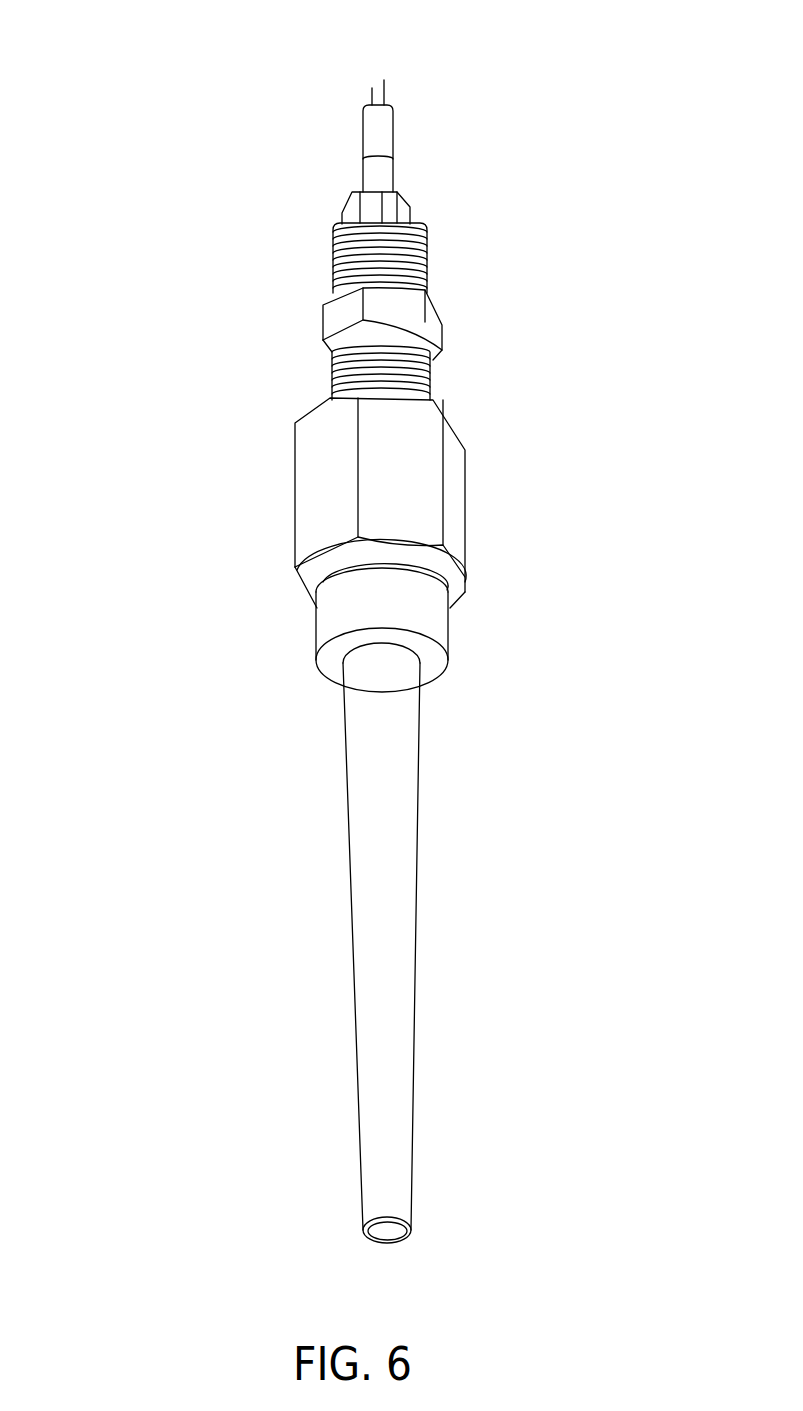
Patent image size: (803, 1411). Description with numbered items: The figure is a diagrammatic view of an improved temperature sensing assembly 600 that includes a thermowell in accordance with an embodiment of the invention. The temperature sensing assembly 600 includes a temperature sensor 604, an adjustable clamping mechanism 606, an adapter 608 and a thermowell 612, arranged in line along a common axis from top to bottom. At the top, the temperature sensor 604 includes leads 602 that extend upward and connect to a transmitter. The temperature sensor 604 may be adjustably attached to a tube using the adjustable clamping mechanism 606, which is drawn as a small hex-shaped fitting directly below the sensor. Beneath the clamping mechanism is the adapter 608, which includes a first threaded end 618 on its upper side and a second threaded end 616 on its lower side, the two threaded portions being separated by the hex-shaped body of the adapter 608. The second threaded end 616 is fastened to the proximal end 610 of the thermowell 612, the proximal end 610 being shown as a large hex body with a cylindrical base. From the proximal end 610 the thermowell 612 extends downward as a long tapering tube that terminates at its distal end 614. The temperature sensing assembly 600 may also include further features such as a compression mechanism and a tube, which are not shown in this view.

The temperature sensing assembly 600 is at (160, 117).
The leads 602 is at (364, 89).
The temperature sensor 604 is at (408, 141).
The adjustable clamping mechanism 606 is at (426, 215).
The adapter 608 is at (488, 337).
The proximal end 610 is at (421, 478).
The thermowell 612 is at (431, 798).
The distal end 614 is at (414, 1249).
The second threaded end 616 is at (317, 380).
The first threaded end 618 is at (319, 273).